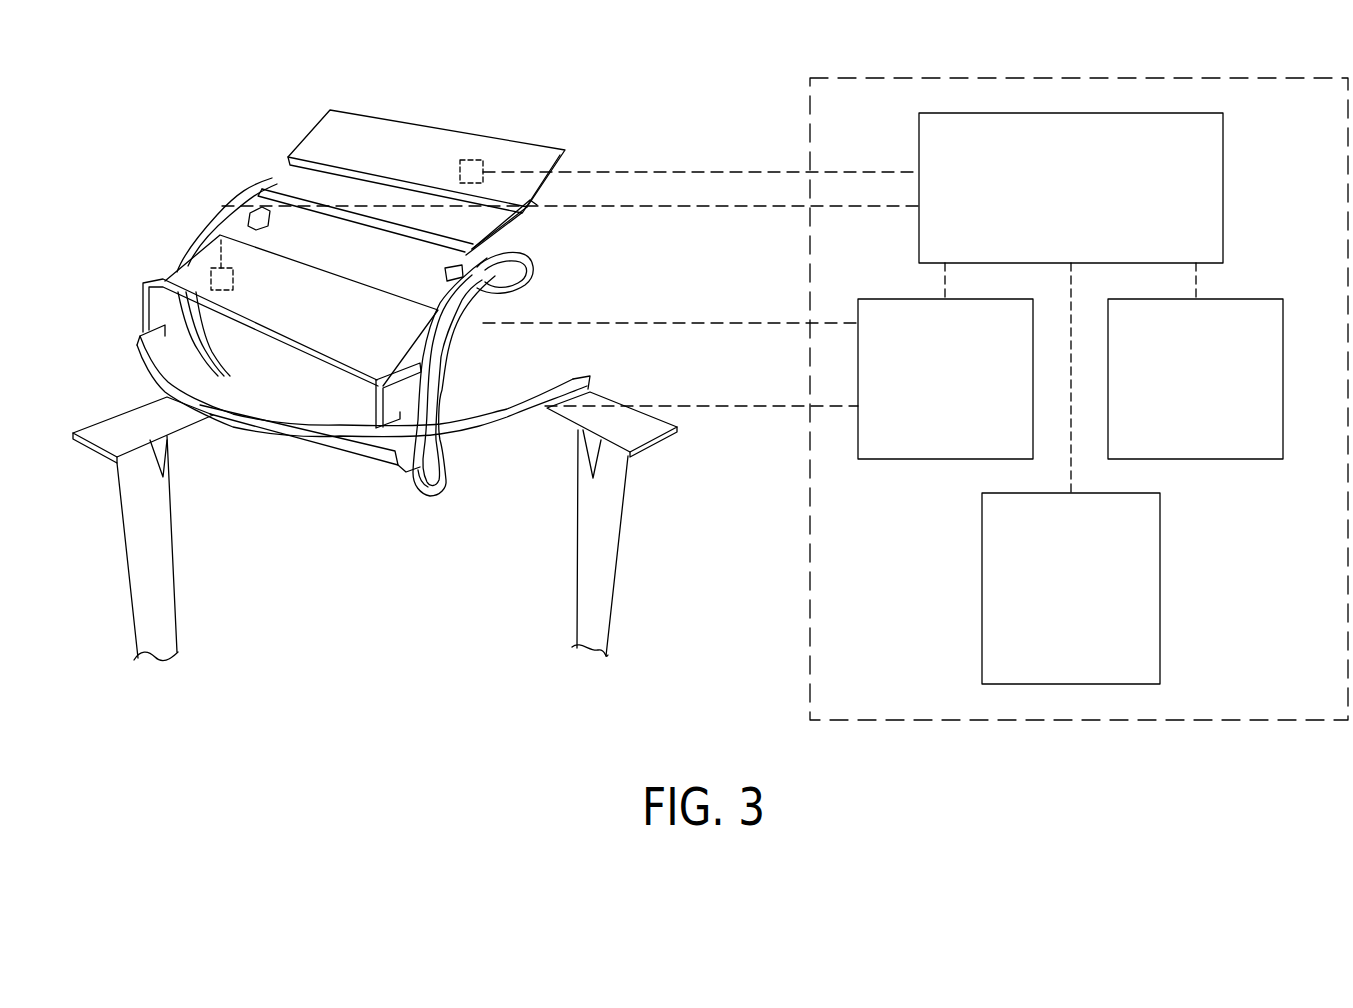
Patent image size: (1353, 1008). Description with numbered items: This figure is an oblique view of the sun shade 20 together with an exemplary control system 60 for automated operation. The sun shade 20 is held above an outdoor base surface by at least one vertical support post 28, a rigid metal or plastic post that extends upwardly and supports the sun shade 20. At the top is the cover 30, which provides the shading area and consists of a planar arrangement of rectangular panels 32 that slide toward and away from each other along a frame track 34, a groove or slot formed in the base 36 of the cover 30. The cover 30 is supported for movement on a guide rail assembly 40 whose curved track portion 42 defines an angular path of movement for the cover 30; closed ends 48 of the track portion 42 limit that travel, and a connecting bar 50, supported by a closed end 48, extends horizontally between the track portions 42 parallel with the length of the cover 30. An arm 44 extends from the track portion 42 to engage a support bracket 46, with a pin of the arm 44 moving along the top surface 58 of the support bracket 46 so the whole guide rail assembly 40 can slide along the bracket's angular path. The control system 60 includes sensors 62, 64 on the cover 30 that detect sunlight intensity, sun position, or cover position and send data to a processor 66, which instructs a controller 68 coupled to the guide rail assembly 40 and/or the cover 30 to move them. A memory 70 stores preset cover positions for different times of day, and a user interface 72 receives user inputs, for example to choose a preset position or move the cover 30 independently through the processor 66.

The sun shade 20 is at (152, 206).
The vertical support post 28 is at (147, 586).
The cover 30 is at (305, 148).
The panels 32 is at (337, 122).
The frame track 34 is at (282, 173).
The base 36 is at (517, 213).
The guide rail assembly 40 is at (477, 312).
The track portion 42 is at (503, 290).
The arm 44 is at (410, 387).
The support bracket 46 is at (143, 350).
The closed ends 48 is at (450, 480).
The connecting bar 50 is at (377, 457).
The top surface 58 is at (177, 395).
The control system 60 is at (810, 105).
The sensor 62 is at (207, 279).
The sensor 64 is at (470, 160).
The processor 66 is at (1082, 227).
The controller 68 is at (957, 418).
The memory 70 is at (1208, 418).
The user interface 72 is at (1082, 652).